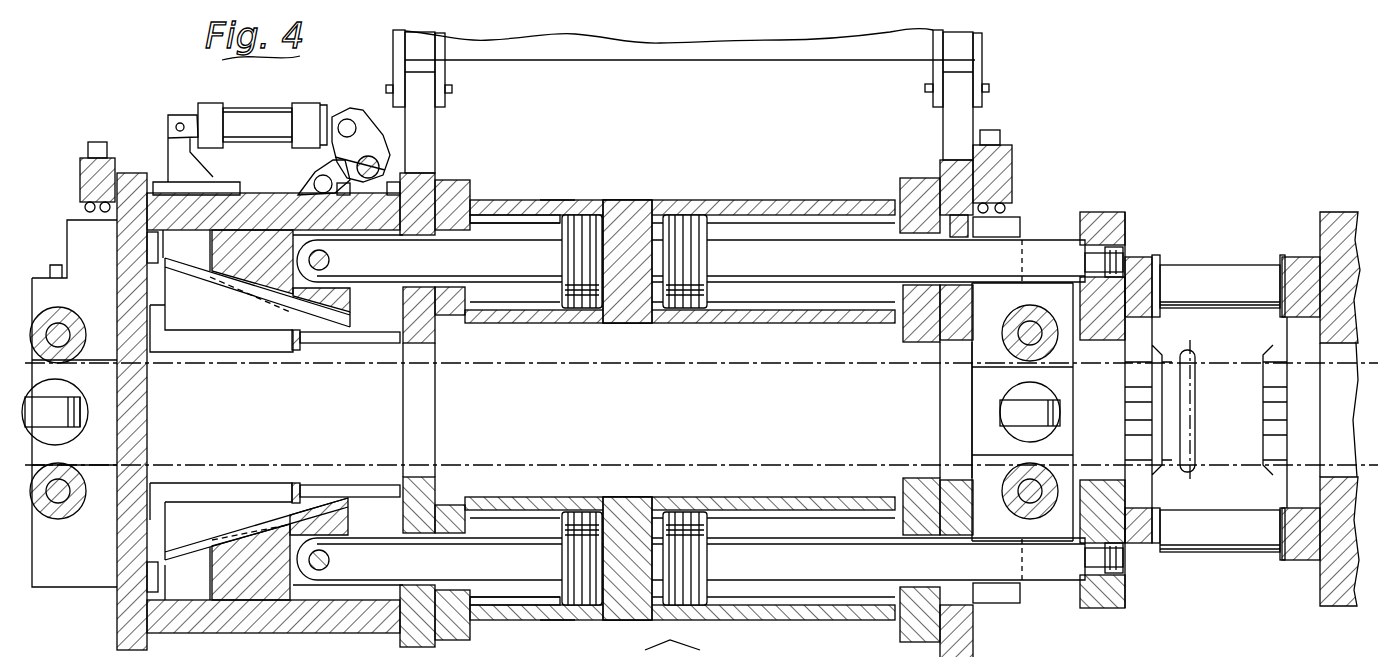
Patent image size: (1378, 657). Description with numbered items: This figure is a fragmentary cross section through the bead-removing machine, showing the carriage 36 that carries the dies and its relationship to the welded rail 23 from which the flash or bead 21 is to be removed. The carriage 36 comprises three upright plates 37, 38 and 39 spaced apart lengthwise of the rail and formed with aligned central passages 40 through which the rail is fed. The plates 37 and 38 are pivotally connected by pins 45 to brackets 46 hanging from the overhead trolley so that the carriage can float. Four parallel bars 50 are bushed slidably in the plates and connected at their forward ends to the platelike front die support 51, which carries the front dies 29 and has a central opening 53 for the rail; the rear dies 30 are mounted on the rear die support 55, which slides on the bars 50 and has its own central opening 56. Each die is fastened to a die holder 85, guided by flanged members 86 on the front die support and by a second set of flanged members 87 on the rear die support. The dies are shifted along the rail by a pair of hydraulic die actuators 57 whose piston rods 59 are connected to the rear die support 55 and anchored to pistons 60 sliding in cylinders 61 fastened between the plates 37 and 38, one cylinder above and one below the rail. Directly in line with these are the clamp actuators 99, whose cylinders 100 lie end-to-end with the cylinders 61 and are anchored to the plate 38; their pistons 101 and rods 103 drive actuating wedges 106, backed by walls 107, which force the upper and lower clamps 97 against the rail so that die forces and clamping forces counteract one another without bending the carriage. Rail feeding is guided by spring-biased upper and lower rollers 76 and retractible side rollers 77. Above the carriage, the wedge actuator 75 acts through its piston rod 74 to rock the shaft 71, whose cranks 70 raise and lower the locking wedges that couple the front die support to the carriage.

The flash or bead 21 is at (1196, 402).
The rail 23 is at (708, 362).
The front die 29 is at (1262, 426).
The rear die 30 is at (1180, 385).
The carriage 36 is at (441, 150).
The upright plate 37 is at (945, 172).
The upright plate 38 is at (432, 178).
The upright plate 39 is at (117, 263).
The central passage 40 is at (140, 345).
The pin 45 is at (452, 90).
The bracket 46 is at (440, 67).
The parallel bar 50 is at (1212, 275).
The front die support 51 is at (1340, 218).
The central opening 53 is at (1340, 476).
The rear die support 55 is at (1100, 212).
The central opening 56 is at (1100, 345).
The hydraulic die operator or actuator 57 is at (783, 198).
The piston rod 59 is at (1045, 245).
The piston 60 is at (698, 212).
The cylinder 61 is at (828, 213).
The crank 70 is at (318, 166).
The rock shaft 71 is at (378, 152).
The piston rod 74 is at (333, 117).
The wedge actuator 75 is at (262, 107).
The upper and lower roller 76 is at (70, 308).
The side roller 77 is at (85, 420).
The die holder 85 is at (1318, 400).
The flanged member 86 is at (1305, 263).
The flanged member 87 is at (1140, 268).
The clamp 97 is at (232, 335).
The clamp actuator 99 is at (556, 196).
The cylinder 100 is at (525, 212).
The piston 101 is at (590, 214).
The rod 103 is at (492, 275).
The actuating wedge 106 is at (350, 300).
The wall 107 is at (283, 417).